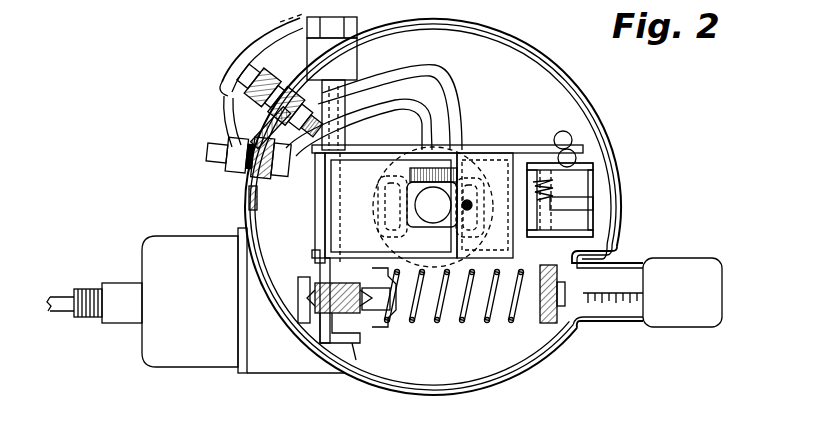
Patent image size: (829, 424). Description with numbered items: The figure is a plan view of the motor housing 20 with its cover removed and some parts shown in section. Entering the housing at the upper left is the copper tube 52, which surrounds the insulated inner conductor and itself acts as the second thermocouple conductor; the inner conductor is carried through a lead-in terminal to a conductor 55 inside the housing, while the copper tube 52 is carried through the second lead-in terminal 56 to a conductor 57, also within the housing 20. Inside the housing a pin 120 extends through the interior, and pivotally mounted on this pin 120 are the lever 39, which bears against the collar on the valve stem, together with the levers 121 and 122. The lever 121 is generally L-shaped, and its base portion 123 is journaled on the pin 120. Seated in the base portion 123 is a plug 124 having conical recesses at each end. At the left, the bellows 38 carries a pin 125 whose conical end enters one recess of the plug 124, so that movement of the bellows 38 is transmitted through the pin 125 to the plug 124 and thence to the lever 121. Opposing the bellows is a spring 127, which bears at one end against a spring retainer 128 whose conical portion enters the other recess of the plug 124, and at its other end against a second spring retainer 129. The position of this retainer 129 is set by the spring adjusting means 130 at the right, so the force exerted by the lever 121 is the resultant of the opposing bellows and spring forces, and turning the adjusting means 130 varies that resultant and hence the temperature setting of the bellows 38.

The motor housing 20 is at (577, 94).
The bellows 38 is at (192, 301).
The lever 39 is at (362, 214).
The copper tube 52 is at (260, 50).
The conductor 55 is at (397, 116).
The second lead-in terminal 56 is at (274, 72).
The conductor 57 is at (430, 66).
The pin 120 is at (358, 338).
The lever 121 is at (500, 117).
The lever 122 is at (503, 248).
The base portion 123 is at (313, 258).
The plug 124 is at (358, 312).
The pin 125 is at (298, 277).
The spring 127 is at (462, 328).
The spring retainer 128 is at (368, 282).
The second spring retainer 129 is at (540, 324).
The spring adjusting means 130 is at (616, 324).